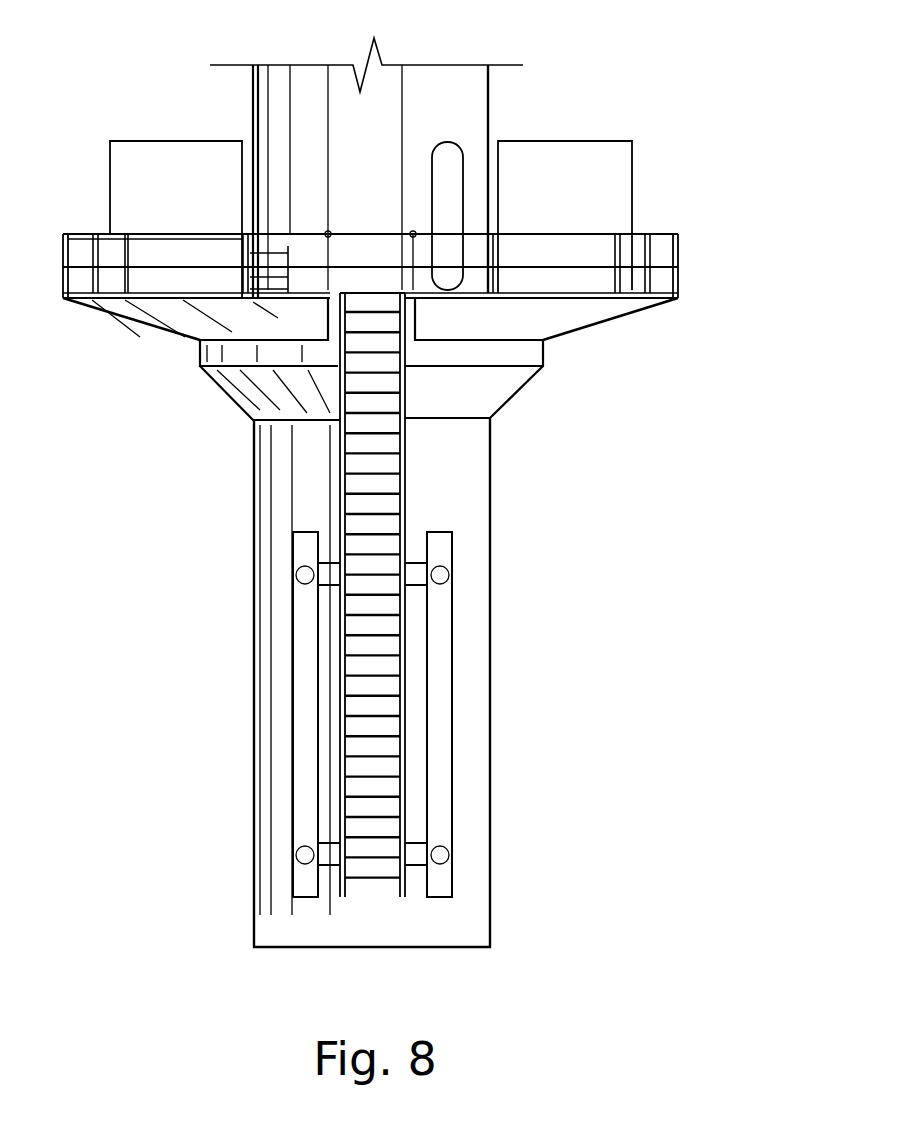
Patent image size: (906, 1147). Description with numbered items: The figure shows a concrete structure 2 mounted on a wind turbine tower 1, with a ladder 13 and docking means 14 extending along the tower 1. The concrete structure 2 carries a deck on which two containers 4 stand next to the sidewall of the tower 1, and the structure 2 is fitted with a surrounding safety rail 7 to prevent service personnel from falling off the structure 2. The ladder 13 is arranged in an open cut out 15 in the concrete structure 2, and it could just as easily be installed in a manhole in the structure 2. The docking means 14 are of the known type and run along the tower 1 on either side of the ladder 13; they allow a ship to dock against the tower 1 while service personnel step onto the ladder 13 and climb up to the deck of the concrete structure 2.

The wind turbine tower 1 is at (475, 98).
The concrete structure 2 is at (500, 388).
The container 4 is at (172, 160).
The safety rail 7 is at (678, 245).
The ladder 13 is at (402, 483).
The docking means 14 is at (440, 635).
The open cut out 15 is at (330, 322).